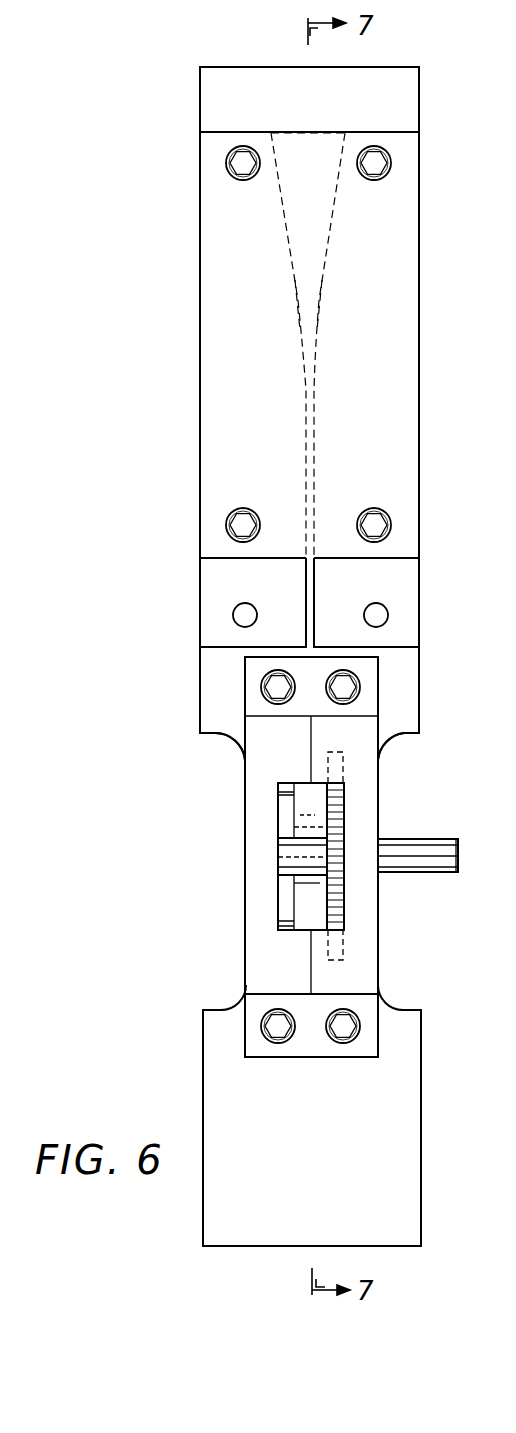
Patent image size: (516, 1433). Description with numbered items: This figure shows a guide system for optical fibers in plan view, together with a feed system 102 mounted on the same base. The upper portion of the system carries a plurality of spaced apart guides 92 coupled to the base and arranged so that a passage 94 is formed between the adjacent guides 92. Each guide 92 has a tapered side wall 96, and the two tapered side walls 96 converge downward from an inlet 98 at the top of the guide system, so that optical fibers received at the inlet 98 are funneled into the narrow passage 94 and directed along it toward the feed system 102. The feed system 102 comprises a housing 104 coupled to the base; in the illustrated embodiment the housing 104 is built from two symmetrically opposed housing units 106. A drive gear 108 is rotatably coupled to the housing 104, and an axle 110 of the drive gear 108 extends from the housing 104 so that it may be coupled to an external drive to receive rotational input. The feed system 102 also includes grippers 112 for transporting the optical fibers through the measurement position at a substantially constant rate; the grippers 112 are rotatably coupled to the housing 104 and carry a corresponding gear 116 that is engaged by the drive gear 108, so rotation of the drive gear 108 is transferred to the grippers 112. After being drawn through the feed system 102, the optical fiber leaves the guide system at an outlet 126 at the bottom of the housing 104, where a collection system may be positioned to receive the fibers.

The guides 92 is at (218, 582).
The passage 94 is at (307, 193).
The tapered side wall 96 is at (303, 251).
The inlet 98 is at (305, 146).
The feed system 102 is at (335, 885).
The housing 104 is at (242, 893).
The housing units 106 is at (261, 777).
The drive gear 108 is at (340, 822).
The axle 110 is at (448, 838).
The grippers 112 is at (304, 793).
The gear 116 is at (347, 774).
The outlet 126 is at (308, 1059).